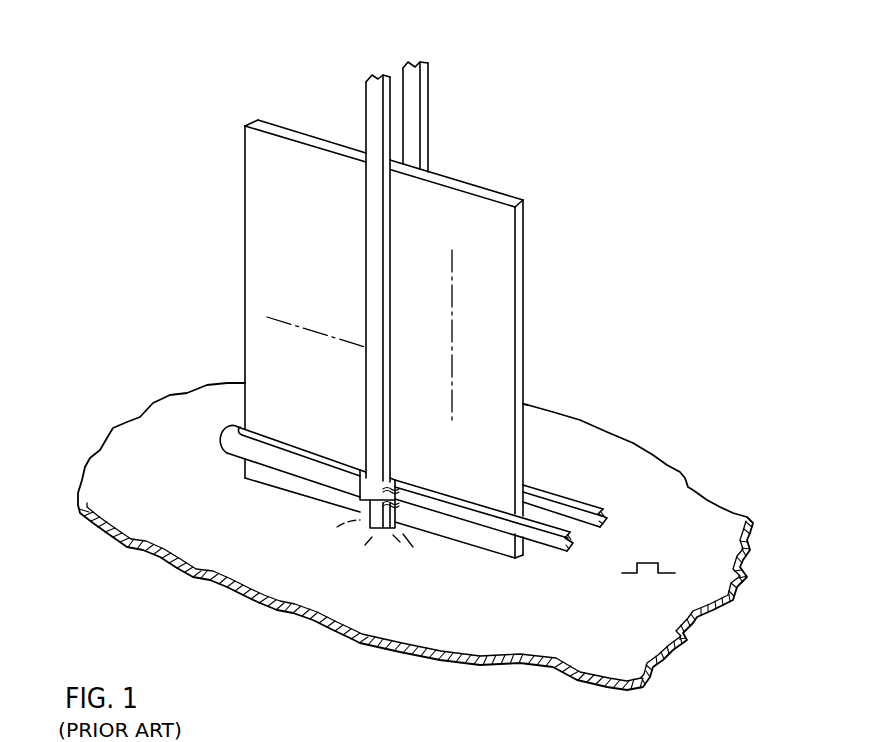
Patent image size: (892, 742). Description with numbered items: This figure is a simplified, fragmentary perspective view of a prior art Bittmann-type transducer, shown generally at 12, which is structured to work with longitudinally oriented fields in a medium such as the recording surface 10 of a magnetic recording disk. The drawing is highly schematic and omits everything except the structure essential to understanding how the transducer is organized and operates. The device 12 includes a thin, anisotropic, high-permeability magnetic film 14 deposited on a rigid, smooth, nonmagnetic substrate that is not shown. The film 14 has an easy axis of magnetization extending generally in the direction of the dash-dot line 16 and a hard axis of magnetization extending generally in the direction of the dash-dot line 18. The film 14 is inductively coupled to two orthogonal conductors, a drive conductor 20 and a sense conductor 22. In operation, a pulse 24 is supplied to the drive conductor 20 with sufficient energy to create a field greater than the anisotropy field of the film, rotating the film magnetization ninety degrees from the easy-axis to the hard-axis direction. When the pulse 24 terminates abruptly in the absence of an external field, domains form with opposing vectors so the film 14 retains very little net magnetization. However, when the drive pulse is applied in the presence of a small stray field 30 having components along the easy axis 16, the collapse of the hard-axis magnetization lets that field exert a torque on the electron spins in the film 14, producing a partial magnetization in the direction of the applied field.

The recording surface 10 is at (721, 520).
The transducer device 12 is at (579, 186).
The magnetic film 14 is at (519, 327).
The easy axis dash-dot line 16 is at (316, 333).
The hard axis dash-dot line 18 is at (452, 400).
The drive conductor 20 is at (578, 500).
The sense conductor 22 is at (426, 118).
The pulse 24 is at (658, 552).
The stray field 30 is at (378, 539).